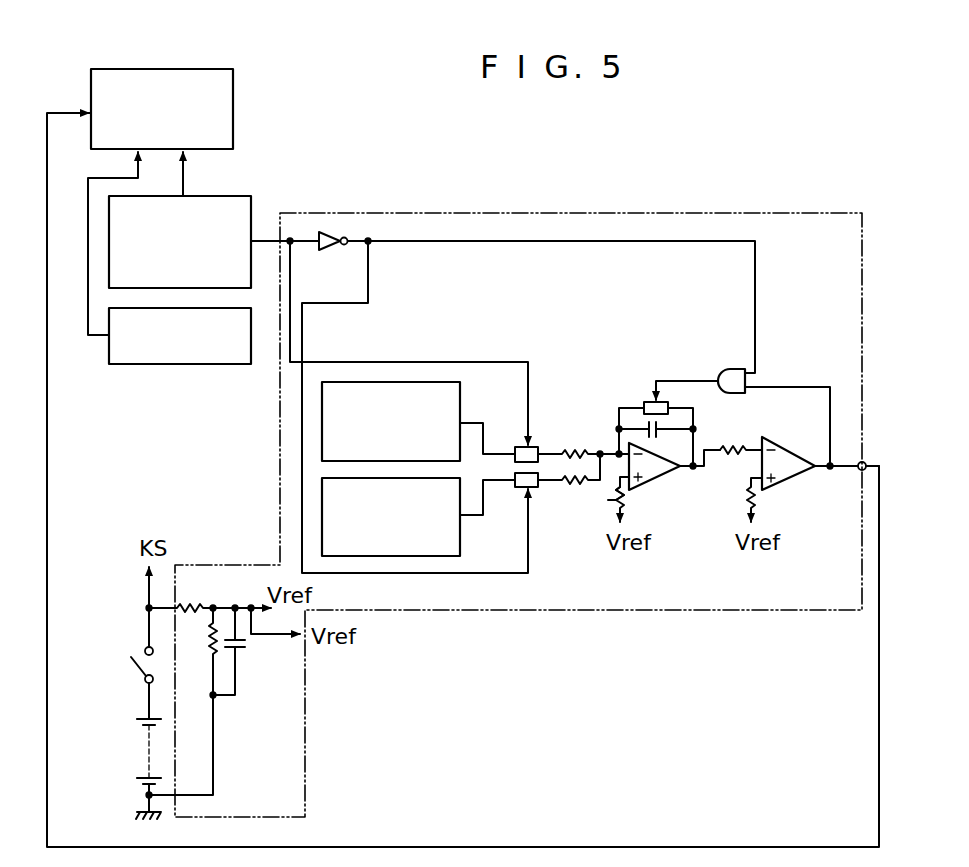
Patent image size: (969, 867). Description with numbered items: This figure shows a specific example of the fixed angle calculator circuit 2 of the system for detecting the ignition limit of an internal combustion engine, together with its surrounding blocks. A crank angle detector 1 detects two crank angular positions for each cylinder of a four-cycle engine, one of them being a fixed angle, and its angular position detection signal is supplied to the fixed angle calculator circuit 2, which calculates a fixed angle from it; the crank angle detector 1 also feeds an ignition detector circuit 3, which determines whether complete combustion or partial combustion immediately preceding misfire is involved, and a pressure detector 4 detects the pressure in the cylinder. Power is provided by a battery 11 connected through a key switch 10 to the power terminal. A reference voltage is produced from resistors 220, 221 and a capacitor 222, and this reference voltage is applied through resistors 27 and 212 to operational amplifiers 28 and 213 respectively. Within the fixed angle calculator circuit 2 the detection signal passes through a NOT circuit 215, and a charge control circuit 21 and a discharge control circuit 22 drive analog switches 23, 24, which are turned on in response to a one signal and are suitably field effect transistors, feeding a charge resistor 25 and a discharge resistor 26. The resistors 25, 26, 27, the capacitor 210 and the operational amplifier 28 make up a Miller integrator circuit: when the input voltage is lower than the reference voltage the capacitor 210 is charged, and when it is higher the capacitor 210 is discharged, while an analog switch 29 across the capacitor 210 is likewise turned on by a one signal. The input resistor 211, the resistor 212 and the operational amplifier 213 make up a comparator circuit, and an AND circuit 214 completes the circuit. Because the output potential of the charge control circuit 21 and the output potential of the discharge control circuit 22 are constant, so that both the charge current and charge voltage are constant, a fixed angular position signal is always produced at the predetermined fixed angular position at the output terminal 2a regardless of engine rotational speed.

The crank angle detector 1 is at (230, 196).
The fixed angle calculator circuit 2 is at (697, 213).
The output terminal 2a is at (879, 453).
The ignition detector circuit 3 is at (233, 103).
The pressure detector 4 is at (228, 364).
The key switch 10 is at (140, 668).
The battery 11 is at (148, 742).
The charge control circuit 21 is at (405, 382).
The discharge control circuit 22 is at (462, 530).
The analog switch 23 is at (546, 440).
The analog switch 24 is at (536, 489).
The charge resistor 25 is at (578, 450).
The discharge resistor 26 is at (580, 485).
The resistor 27 is at (624, 498).
The operational amplifier 28 is at (668, 472).
The analog switch 29 is at (652, 402).
The capacitor 210 is at (660, 424).
The input resistor 211 is at (742, 427).
The resistor 212 is at (754, 500).
The operational amplifier 213 is at (788, 432).
The AND circuit 214 is at (730, 368).
The NOT circuit 215 is at (338, 234).
The resistor 220 is at (180, 606).
The resistor 221 is at (210, 650).
The capacitor 222 is at (246, 644).